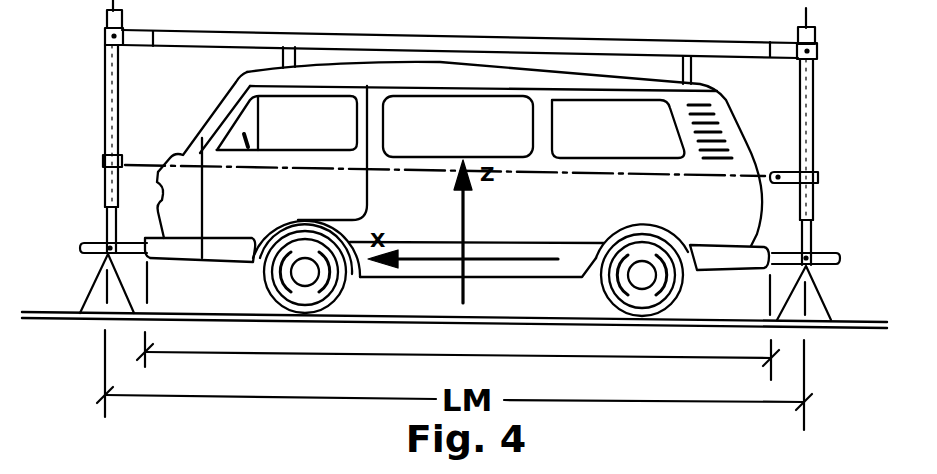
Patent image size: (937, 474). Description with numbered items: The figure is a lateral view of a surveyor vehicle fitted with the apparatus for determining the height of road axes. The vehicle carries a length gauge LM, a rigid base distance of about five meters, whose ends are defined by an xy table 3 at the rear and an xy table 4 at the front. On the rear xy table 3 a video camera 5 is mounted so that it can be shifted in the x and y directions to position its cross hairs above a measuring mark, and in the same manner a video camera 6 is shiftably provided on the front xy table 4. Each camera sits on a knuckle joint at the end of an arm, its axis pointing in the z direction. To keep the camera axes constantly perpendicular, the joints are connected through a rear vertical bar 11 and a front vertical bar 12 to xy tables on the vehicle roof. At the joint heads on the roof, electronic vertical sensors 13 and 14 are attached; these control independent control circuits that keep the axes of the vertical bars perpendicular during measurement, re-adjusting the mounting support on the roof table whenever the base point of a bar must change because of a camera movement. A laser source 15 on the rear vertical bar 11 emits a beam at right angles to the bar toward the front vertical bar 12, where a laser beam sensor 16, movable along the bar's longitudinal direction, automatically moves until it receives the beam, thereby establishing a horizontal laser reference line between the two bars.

The xy table 3 is at (840, 258).
The xy table 4 is at (83, 248).
The video camera 5 is at (812, 247).
The video camera 6 is at (107, 228).
The vertical bar 11 is at (813, 110).
The vertical bar 12 is at (108, 70).
The electronic vertical sensor 13 is at (818, 34).
The electronic vertical sensor 14 is at (108, 17).
The laser source 15 is at (812, 173).
The laser beam sensor 16 is at (103, 156).